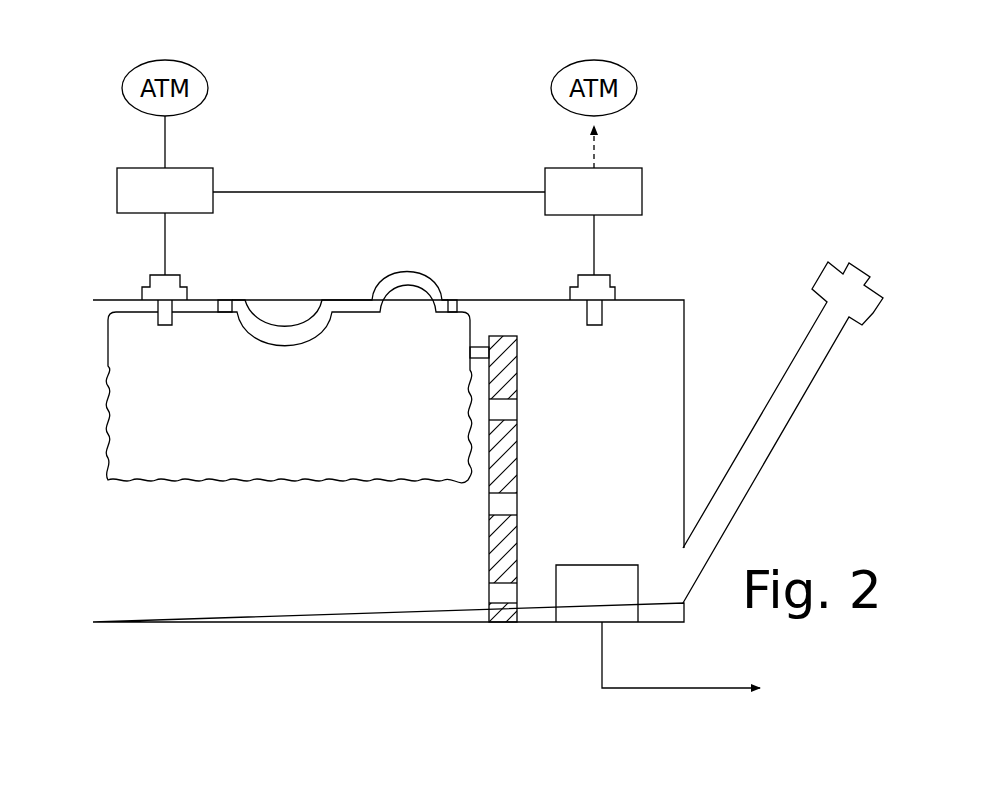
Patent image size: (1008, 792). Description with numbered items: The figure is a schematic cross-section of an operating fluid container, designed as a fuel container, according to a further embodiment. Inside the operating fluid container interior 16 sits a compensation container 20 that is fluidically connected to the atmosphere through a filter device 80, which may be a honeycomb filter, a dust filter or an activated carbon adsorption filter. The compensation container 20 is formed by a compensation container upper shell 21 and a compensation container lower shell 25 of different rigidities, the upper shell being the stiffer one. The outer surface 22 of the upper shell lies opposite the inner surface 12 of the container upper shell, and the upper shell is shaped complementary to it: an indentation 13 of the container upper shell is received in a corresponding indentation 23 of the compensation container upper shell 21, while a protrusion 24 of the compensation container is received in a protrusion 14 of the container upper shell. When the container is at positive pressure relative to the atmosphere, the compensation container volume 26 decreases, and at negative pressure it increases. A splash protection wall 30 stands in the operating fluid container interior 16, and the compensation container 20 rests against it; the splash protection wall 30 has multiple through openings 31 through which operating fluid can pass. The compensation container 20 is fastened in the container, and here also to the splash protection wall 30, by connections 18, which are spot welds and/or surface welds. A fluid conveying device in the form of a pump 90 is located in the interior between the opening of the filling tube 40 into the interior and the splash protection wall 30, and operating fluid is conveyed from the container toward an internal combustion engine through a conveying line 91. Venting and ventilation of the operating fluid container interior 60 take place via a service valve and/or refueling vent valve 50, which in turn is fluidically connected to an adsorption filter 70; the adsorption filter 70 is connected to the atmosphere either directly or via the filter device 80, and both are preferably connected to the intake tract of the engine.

The inner surface 12 is at (357, 301).
The indentation 13 is at (285, 316).
The protrusion 14 is at (414, 277).
The operating fluid container interior 16 is at (189, 606).
The connection 18 is at (226, 300).
The compensation container 20 is at (150, 435).
The compensation container upper shell 21 is at (122, 335).
The outer surface 22 is at (255, 337).
The indentation 23 is at (287, 341).
The protrusion 24 is at (406, 298).
The compensation container lower shell 25 is at (425, 487).
The compensation container volume 26 is at (312, 453).
The splash protection wall 30 is at (508, 496).
The through openings 31 is at (508, 411).
The filling tube 40 is at (798, 385).
The refueling vent valve 50 is at (600, 287).
The operating fluid container interior 60 is at (158, 283).
The adsorption filter 70 is at (596, 193).
The filter device 80 is at (188, 177).
The pump 90 is at (572, 612).
The conveying line 91 is at (602, 660).